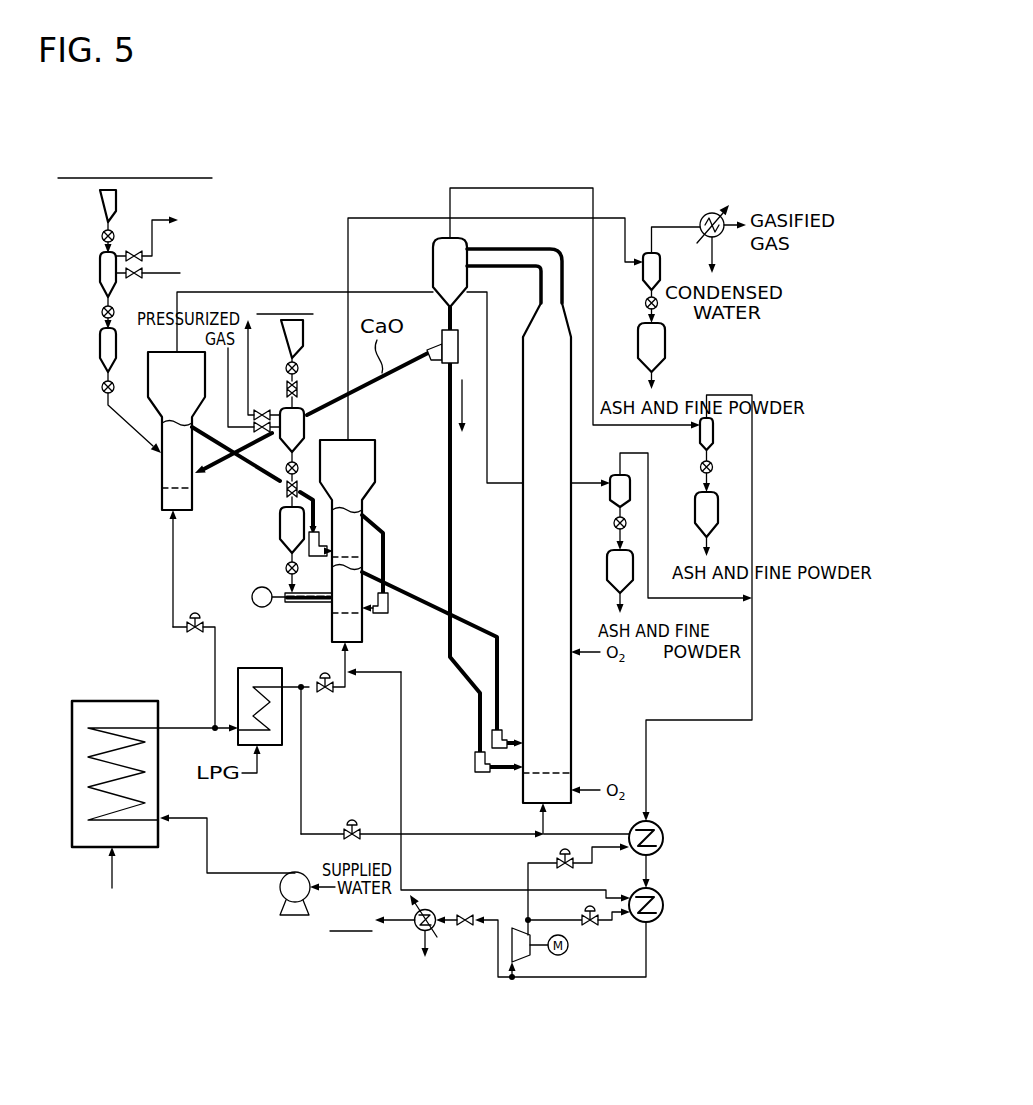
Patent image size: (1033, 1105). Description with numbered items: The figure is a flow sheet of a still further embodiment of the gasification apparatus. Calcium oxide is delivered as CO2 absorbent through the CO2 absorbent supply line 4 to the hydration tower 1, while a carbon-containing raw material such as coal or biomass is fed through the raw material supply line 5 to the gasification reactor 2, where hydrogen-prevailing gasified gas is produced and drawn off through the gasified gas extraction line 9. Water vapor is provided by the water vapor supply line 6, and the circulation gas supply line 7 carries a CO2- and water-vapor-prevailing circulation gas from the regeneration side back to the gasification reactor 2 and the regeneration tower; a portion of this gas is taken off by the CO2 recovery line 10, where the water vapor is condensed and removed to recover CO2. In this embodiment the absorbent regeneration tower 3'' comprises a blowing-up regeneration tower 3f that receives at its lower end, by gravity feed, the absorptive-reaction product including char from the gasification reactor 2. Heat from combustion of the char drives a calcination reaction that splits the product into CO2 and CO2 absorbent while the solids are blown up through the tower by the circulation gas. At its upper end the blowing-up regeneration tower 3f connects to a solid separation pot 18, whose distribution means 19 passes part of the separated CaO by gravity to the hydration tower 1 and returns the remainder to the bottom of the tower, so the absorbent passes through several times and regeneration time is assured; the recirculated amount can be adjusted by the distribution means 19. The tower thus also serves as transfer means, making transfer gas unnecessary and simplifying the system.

The hydration tower 1 is at (158, 375).
The gasification reactor 2 is at (367, 468).
The absorbent regeneration tower 3'' is at (519, 310).
The blowing-up regeneration tower 3f is at (573, 706).
The CO2 absorbent supply line 4 is at (85, 301).
The raw material supply line 5 is at (310, 357).
The water vapor supply line 6 is at (181, 858).
The circulation gas supply line 7 is at (675, 931).
The gasified gas extraction line 9 is at (376, 204).
The CO2 recovery line 10 is at (390, 947).
The solid separation pot 18 is at (433, 253).
The distribution means 19 is at (443, 365).